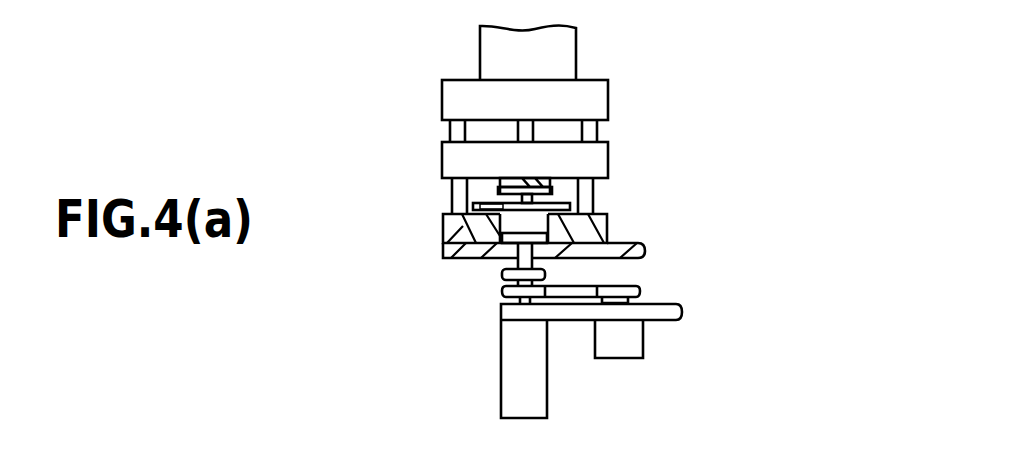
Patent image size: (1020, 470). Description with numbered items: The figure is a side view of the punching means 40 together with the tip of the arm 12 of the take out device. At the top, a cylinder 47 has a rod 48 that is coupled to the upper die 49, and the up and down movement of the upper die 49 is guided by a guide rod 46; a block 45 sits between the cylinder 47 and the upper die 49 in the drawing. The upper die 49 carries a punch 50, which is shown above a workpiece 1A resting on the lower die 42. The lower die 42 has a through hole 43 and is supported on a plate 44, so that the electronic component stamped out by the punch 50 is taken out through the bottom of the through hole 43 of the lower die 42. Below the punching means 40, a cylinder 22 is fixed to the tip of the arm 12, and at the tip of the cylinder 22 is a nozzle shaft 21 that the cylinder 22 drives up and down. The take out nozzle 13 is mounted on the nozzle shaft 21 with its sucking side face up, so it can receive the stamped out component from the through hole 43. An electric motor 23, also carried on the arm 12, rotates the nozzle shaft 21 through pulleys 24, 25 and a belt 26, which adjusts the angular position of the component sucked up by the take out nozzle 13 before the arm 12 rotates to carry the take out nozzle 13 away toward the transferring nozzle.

The punching means 40 is at (424, 88).
The cylinder 47 is at (567, 55).
The upper block 45 is at (597, 98).
The guide rod 46 is at (450, 131).
The rod 48 is at (528, 133).
The upper die 49 is at (597, 165).
The punch 50 is at (500, 191).
The semiconductor chip 1A is at (553, 203).
The lower die 42 is at (610, 232).
The through hole 43 is at (510, 223).
The base plate 44 is at (640, 253).
The take out nozzle 13 is at (502, 274).
The pulley 25 is at (502, 291).
The belt 26 is at (583, 283).
The pulley 24 is at (637, 290).
The nozzle shaft 21 is at (502, 310).
The cylinder 22 is at (501, 358).
The electric motor 23 is at (633, 333).
The arm 12 is at (557, 322).